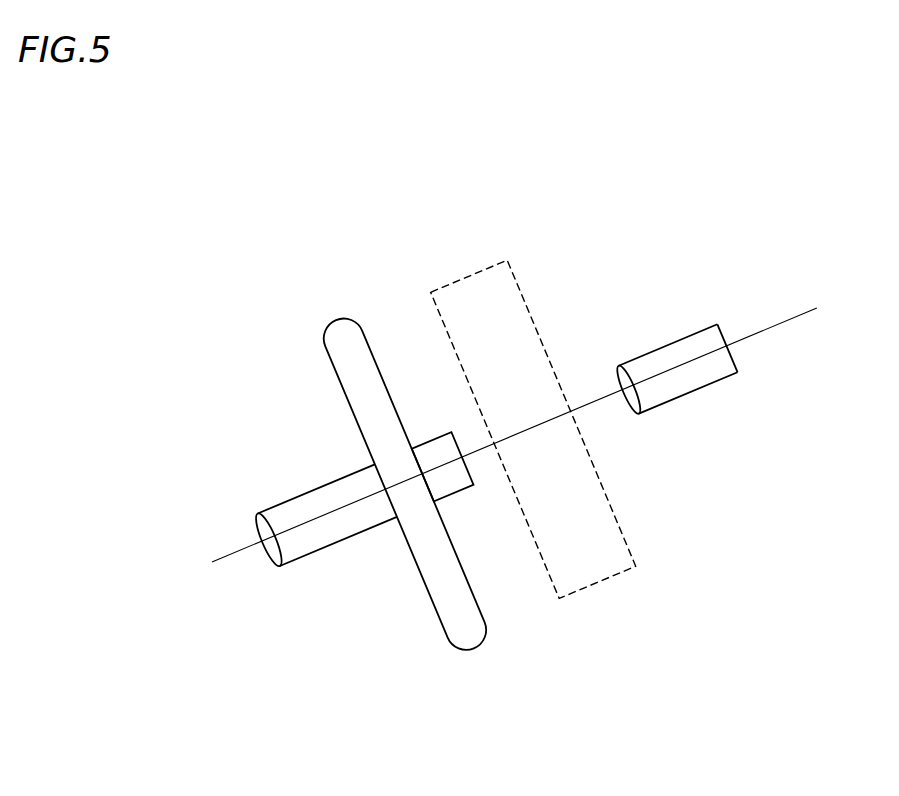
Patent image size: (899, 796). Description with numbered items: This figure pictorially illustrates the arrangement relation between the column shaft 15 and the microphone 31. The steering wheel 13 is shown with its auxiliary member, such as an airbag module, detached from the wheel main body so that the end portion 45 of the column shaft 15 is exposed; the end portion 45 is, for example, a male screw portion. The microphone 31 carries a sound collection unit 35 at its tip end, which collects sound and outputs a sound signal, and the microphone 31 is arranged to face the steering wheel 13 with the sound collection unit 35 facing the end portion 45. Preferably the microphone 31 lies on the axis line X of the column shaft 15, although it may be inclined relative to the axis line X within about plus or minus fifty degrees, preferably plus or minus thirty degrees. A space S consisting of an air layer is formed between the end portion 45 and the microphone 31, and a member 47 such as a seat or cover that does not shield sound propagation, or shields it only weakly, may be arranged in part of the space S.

The steering wheel 13 is at (458, 637).
The column shaft 15 is at (433, 439).
The microphone 31 is at (681, 331).
The sound collection unit 35 is at (619, 378).
The end portion 45 is at (475, 483).
The member 47 is at (608, 578).
The space S is at (580, 397).
The axis line X is at (530, 429).